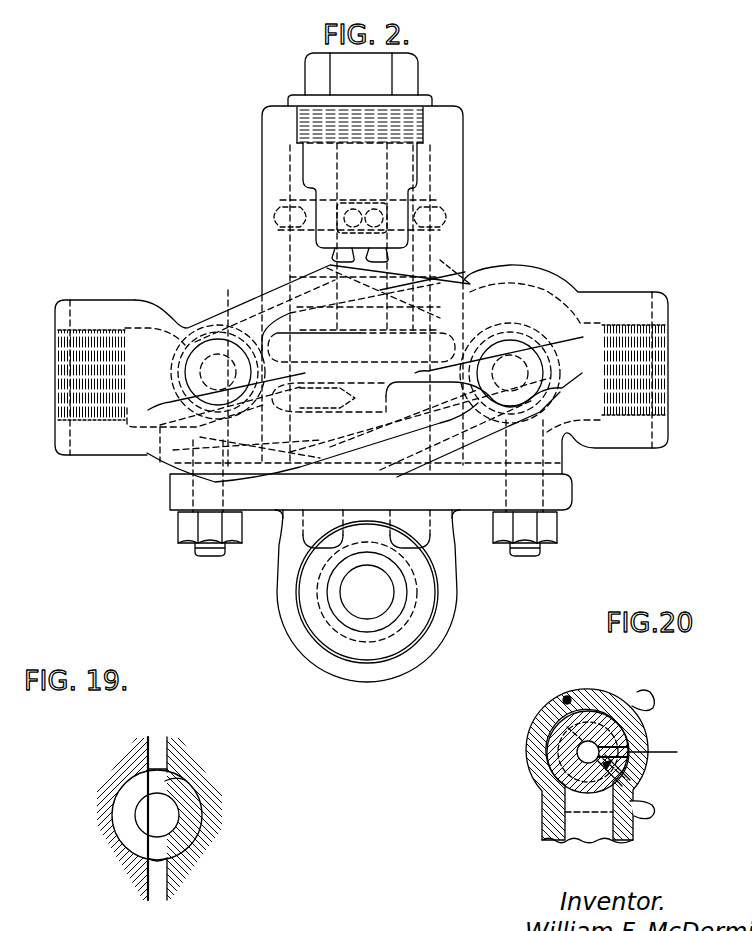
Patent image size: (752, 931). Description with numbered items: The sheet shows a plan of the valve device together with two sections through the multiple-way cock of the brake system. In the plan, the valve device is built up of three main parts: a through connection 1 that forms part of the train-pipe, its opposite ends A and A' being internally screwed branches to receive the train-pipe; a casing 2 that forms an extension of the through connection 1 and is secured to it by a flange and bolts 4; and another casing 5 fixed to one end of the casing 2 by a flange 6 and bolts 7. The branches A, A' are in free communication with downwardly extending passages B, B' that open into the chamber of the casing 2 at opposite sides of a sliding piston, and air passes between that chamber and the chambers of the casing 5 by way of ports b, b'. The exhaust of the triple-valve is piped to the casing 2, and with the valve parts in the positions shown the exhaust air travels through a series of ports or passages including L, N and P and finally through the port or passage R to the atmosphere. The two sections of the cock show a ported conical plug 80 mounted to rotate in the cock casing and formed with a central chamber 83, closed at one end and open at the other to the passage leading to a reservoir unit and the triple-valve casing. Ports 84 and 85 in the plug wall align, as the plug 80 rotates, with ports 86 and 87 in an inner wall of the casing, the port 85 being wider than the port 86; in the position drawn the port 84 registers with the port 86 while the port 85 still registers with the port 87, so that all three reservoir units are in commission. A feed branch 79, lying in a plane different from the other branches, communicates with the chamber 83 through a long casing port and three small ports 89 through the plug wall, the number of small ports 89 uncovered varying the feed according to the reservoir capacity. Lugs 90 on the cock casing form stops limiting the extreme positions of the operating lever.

In FIG. 2, the through connection 1 is at (548, 280).
In FIG. 2, the casing 2 is at (262, 201).
In FIG. 2, the bolts 4 is at (195, 372).
In FIG. 2, the casing 5 is at (430, 640).
In FIG. 2, the flange 6 is at (172, 494).
In FIG. 2, the bolts 7 is at (197, 557).
In FIG. 2, the port or passage N is at (357, 198).
In FIG. 2, the port or passage P is at (330, 268).
In FIG. 2, the port or passage L is at (433, 213).
In FIG. 2, the port or passage R is at (448, 275).
In FIG. 2, the end branch A is at (68, 375).
In FIG. 2, the end branch A' is at (655, 370).
In FIG. 2, the downwardly extending passage B is at (329, 398).
In FIG. 2, the downwardly extending passage B' is at (361, 348).
In FIG. 2, the port b is at (294, 541).
In FIG. 2, the port b' is at (440, 543).
In FIG. 20, the branch 79 is at (575, 827).
In FIG. 19, the ported conical plug 80 is at (187, 833).
In FIG. 20, the ported conical plug 80 is at (566, 703).
In FIG. 19, the central chamber 83 is at (143, 812).
In FIG. 20, the central chamber 83 is at (580, 745).
In FIG. 19, the port 84 is at (160, 847).
In FIG. 19, the port 85 is at (183, 778).
In FIG. 19, the port 86 is at (157, 880).
In FIG. 19, the port 87 is at (153, 747).
In FIG. 20, the small ports 89 is at (630, 750).
In FIG. 20, the lugs 90 is at (643, 698).